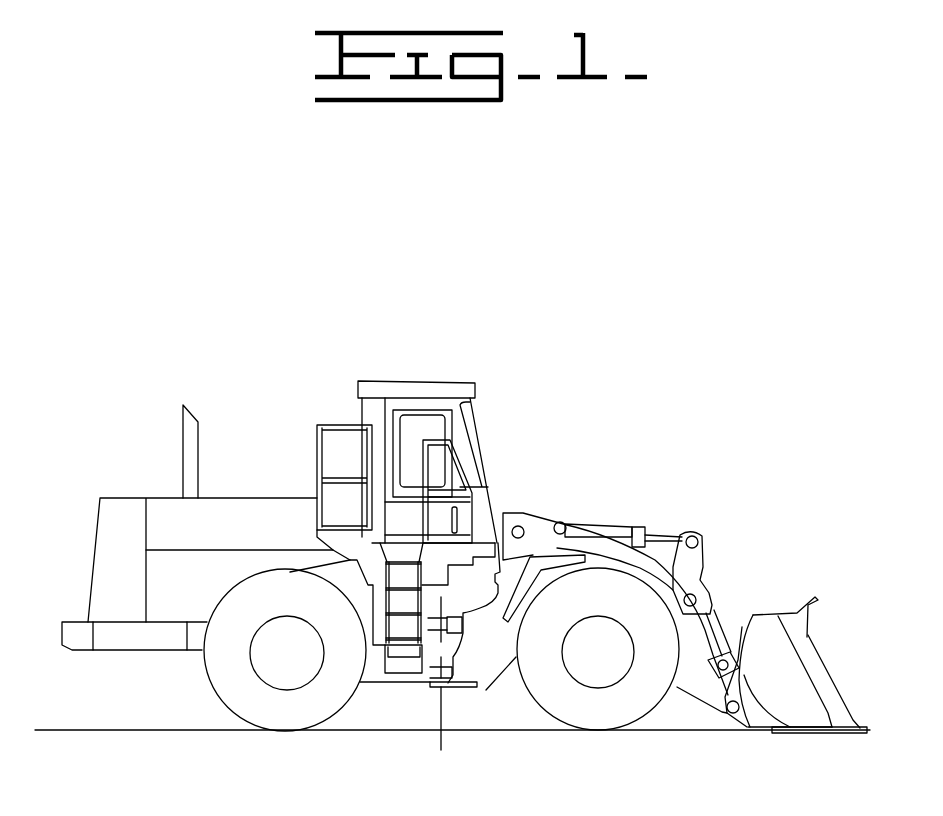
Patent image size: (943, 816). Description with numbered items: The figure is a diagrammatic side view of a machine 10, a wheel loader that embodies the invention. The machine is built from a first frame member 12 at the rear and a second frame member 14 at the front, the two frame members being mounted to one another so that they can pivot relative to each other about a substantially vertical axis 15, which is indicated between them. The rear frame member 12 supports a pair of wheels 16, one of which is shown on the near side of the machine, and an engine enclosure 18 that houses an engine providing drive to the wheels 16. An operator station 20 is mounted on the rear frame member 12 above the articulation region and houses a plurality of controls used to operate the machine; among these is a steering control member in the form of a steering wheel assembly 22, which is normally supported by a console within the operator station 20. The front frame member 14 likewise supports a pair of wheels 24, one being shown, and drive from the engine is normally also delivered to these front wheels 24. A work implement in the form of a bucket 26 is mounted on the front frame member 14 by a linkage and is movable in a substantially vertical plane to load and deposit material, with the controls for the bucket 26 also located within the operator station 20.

The machine 10 is at (586, 439).
The first frame member 12 is at (118, 642).
The second frame member 14 is at (488, 668).
The substantially vertical axis 15 is at (440, 738).
The wheels 16 is at (227, 680).
The engine enclosure 18 is at (237, 498).
The operator station 20 is at (432, 380).
The steering wheel assembly 22 is at (463, 465).
The wheels 24 is at (633, 710).
The bucket 26 is at (797, 678).